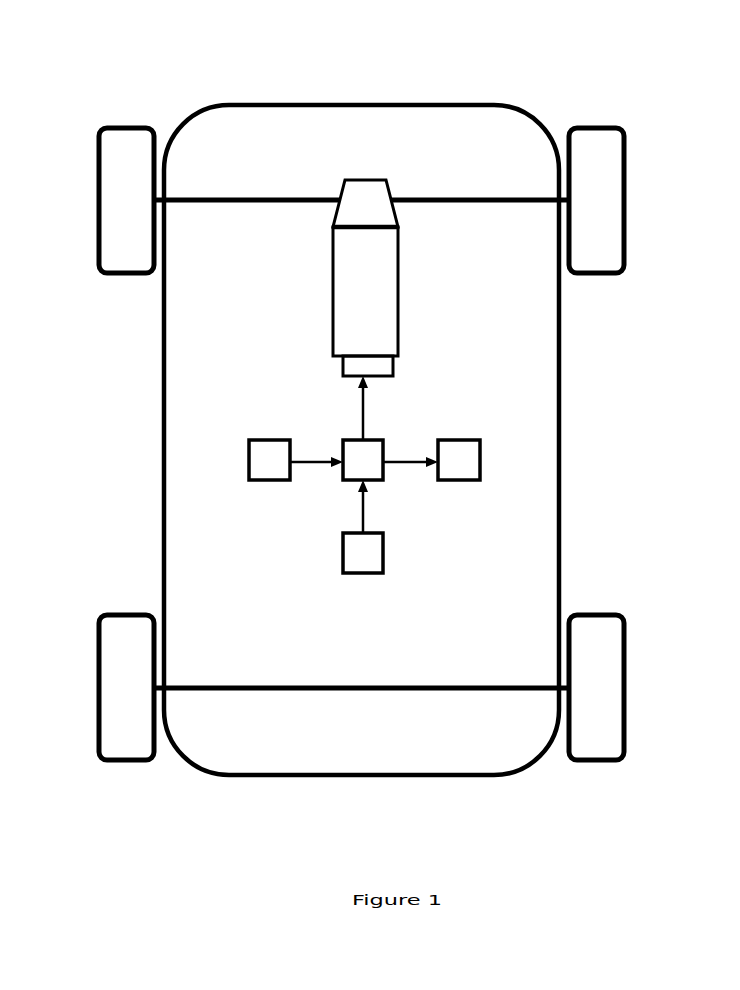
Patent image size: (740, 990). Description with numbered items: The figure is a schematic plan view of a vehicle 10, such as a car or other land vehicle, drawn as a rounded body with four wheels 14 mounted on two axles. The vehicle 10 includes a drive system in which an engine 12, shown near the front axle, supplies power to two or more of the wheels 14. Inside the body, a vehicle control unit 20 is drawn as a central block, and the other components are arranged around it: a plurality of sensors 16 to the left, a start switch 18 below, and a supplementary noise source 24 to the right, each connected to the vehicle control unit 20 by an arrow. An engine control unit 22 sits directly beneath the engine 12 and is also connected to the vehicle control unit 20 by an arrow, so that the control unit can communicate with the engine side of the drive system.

The vehicle 10 is at (243, 105).
The engine 12 is at (398, 278).
The wheels 14 is at (137, 152).
The sensors 16 is at (249, 448).
The start switch 18 is at (383, 560).
The vehicle control unit 20 is at (383, 470).
The engine control unit 22 is at (343, 372).
The supplementary noise source 24 is at (463, 440).